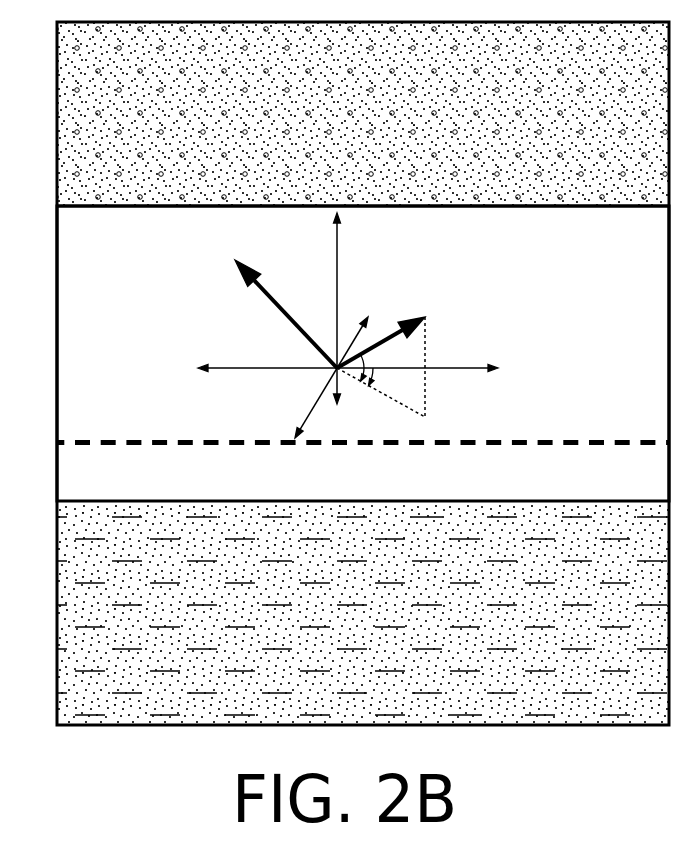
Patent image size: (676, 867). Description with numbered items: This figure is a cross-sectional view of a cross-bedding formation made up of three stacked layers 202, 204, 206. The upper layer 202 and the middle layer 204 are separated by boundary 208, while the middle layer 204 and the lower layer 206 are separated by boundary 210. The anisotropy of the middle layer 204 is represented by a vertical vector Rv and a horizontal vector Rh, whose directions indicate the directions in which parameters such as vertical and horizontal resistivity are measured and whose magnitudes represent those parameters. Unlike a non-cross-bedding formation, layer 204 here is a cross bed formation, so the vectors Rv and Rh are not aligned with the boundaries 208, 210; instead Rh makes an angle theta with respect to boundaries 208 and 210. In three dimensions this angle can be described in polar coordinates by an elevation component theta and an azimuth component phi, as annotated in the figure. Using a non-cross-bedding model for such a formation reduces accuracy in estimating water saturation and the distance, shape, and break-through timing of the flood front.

The layer 202 is at (555, 108).
The layer 204 is at (555, 353).
The layer 206 is at (555, 607).
The boundary 208 is at (605, 206).
The boundary 210 is at (613, 502).